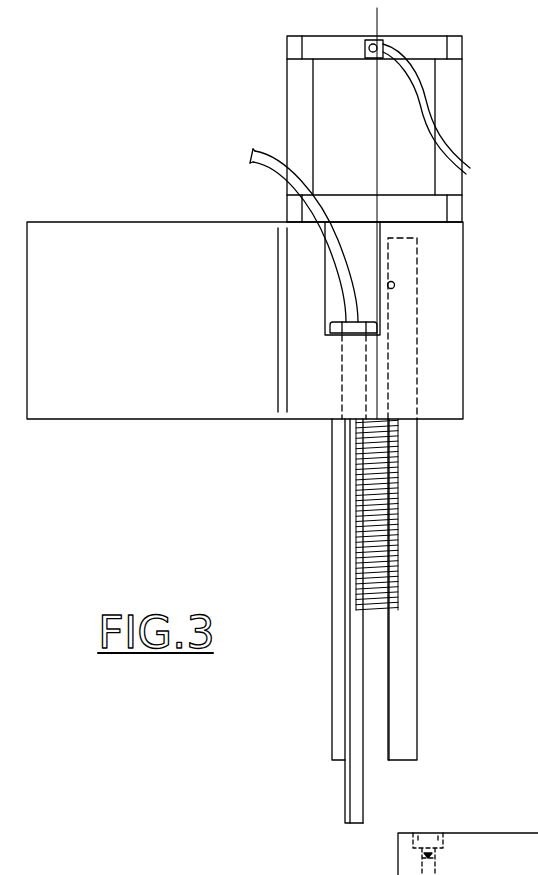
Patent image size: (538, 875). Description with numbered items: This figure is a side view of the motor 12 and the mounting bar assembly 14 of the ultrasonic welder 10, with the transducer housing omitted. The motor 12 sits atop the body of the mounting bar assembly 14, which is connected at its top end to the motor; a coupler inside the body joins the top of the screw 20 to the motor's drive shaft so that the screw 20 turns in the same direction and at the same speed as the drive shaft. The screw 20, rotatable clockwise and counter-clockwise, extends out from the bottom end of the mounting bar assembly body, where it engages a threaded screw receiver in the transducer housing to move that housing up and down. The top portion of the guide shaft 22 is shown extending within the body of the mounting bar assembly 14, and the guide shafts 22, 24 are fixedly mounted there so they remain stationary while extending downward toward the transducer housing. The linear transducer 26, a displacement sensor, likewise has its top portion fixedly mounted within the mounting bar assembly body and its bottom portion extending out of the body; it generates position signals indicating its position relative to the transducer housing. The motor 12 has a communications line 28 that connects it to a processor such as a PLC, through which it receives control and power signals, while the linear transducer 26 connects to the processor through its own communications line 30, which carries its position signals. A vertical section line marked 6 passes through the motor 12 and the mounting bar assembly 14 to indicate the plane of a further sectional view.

The welder 10 is at (194, 54).
The motor 12 is at (476, 133).
The mounting bar assembly 14 is at (478, 327).
The section line 6- 6 is at (394, 14).
The screw 20 is at (382, 566).
The linear guide shaft 22 is at (410, 632).
The linear guide shaft 24 is at (337, 698).
The linear transducer 26 is at (360, 797).
The communications line 28 is at (470, 166).
The communications line 30 is at (248, 157).